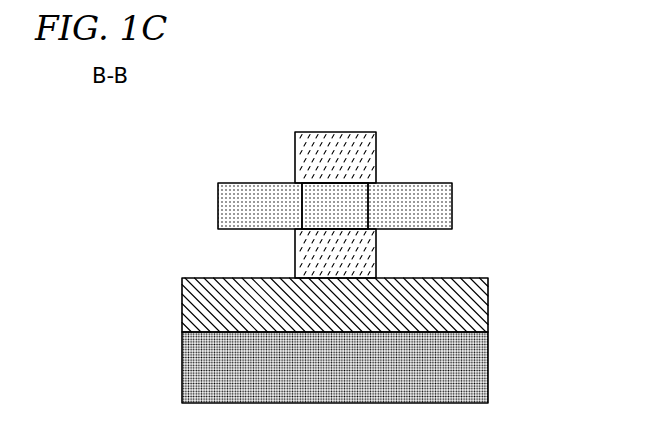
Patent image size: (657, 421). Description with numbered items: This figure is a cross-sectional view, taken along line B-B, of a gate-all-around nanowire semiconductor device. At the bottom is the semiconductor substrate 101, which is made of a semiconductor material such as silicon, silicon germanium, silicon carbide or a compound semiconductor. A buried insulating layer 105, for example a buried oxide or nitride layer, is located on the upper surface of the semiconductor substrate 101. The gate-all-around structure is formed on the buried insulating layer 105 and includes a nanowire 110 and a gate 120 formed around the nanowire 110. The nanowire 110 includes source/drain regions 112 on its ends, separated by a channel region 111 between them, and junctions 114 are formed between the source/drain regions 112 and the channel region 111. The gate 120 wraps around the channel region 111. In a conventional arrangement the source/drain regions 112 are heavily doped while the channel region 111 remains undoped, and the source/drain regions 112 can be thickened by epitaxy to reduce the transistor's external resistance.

The semiconductor substrate 101 is at (488, 365).
The buried insulating layer 105 is at (488, 303).
The nanowire 110 is at (276, 183).
The channel region 111 is at (338, 185).
The source/drain regions 112 is at (452, 210).
The junctions 114 is at (368, 207).
The gate 120 is at (377, 143).